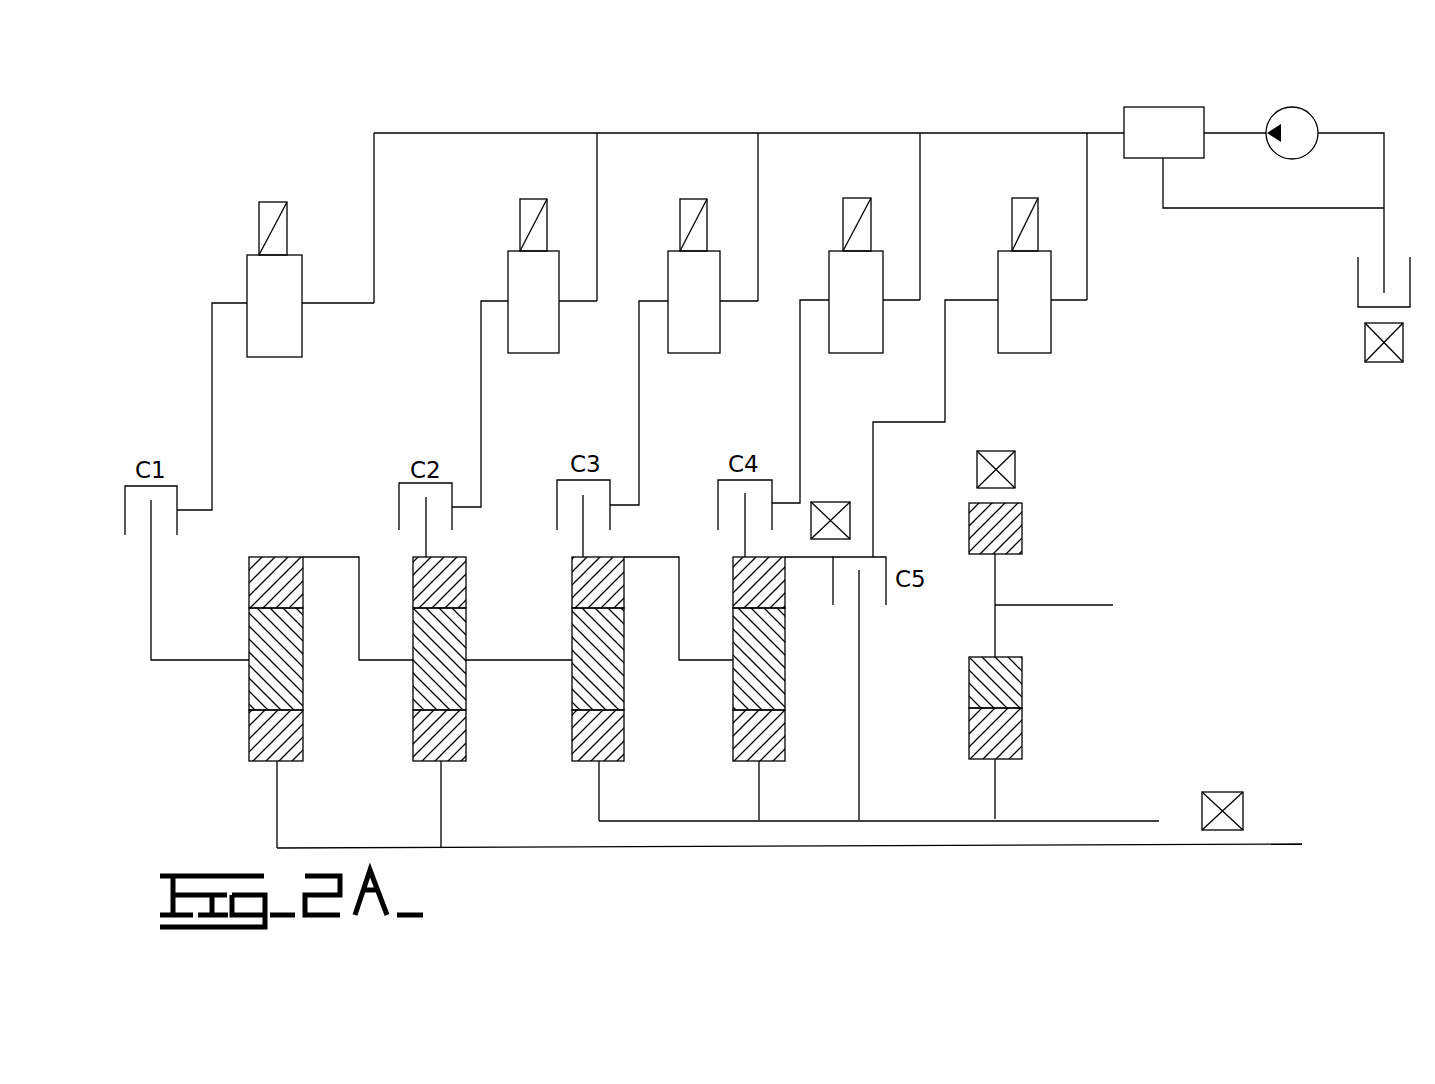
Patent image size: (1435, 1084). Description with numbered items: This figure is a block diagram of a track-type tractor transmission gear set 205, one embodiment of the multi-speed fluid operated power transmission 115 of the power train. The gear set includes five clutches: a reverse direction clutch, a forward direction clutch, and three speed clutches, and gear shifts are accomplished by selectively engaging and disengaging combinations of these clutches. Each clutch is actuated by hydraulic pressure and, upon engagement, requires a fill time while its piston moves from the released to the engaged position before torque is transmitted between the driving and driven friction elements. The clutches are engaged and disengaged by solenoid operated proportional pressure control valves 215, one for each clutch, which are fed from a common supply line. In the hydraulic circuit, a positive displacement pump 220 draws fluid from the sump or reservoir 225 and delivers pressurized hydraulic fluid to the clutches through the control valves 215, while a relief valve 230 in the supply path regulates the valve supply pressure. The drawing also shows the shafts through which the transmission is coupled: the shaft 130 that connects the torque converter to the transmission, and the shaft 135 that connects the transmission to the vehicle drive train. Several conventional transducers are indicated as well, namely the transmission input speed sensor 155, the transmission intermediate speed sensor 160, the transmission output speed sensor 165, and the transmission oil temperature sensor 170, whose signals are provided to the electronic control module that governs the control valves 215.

The track-type tractor transmission gear set 205 is at (241, 141).
The multi-speed fluid operated power transmission 115 is at (340, 128).
The solenoid operated proportional pressure control valves 215 is at (247, 275).
The relief valve 230 is at (1177, 107).
The positive displacement pump 220 is at (1293, 107).
The sump or reservoir 225 is at (1358, 290).
The transmission oil temperature sensor 170 is at (1365, 344).
The transmission intermediate speed sensor 160 is at (828, 502).
The transmission output speed sensor 165 is at (1000, 451).
The shaft 135 is at (1063, 605).
The transmission input speed sensor 155 is at (1220, 792).
The shaft 130 is at (1192, 845).